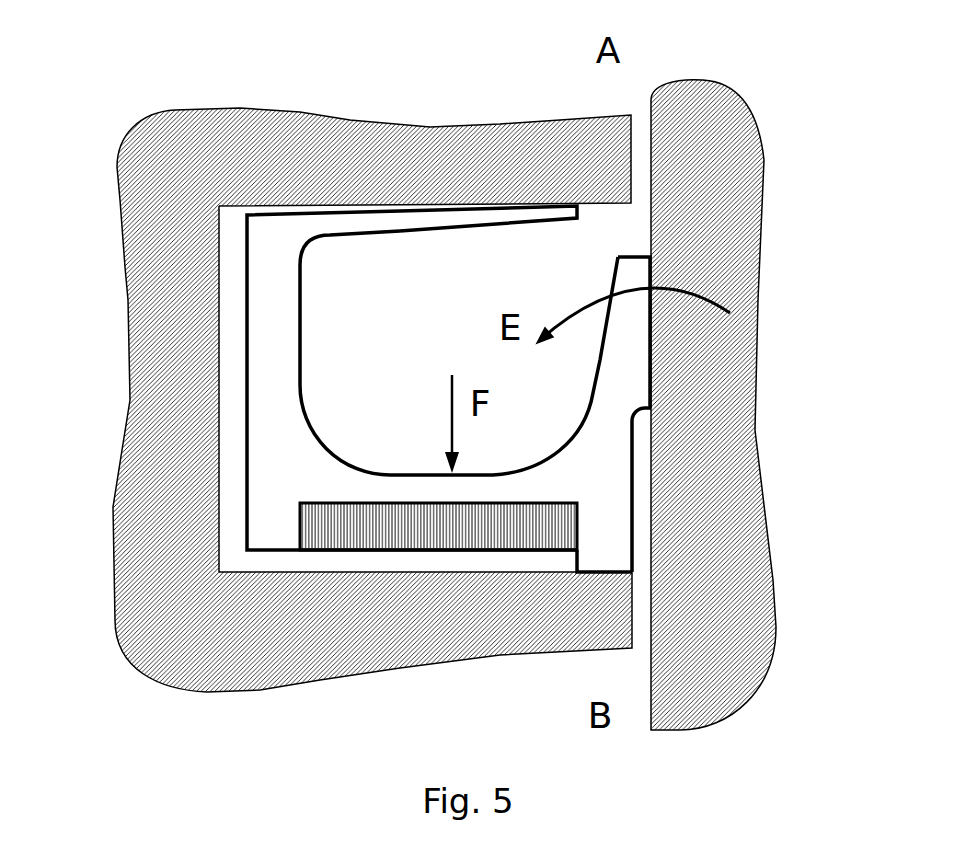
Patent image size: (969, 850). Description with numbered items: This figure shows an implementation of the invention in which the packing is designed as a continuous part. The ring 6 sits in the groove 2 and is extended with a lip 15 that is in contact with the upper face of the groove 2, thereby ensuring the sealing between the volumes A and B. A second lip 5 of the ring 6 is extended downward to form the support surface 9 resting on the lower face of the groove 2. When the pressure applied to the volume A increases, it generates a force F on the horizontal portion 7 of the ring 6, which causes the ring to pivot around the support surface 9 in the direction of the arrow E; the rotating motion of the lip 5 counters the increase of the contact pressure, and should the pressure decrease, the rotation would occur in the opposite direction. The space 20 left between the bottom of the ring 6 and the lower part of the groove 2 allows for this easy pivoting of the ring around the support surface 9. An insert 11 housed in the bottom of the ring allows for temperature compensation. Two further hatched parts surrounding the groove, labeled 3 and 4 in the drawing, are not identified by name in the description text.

The groove 2 is at (232, 260).
The first housing part 3 is at (433, 127).
The second housing part 4 is at (767, 160).
The lip 5 is at (632, 342).
The ring 6 is at (635, 503).
The horizontal portion 7 is at (288, 460).
The support surface 9 is at (608, 575).
The insert 11 is at (435, 552).
The lip 15 is at (547, 213).
The space 20 is at (367, 562).